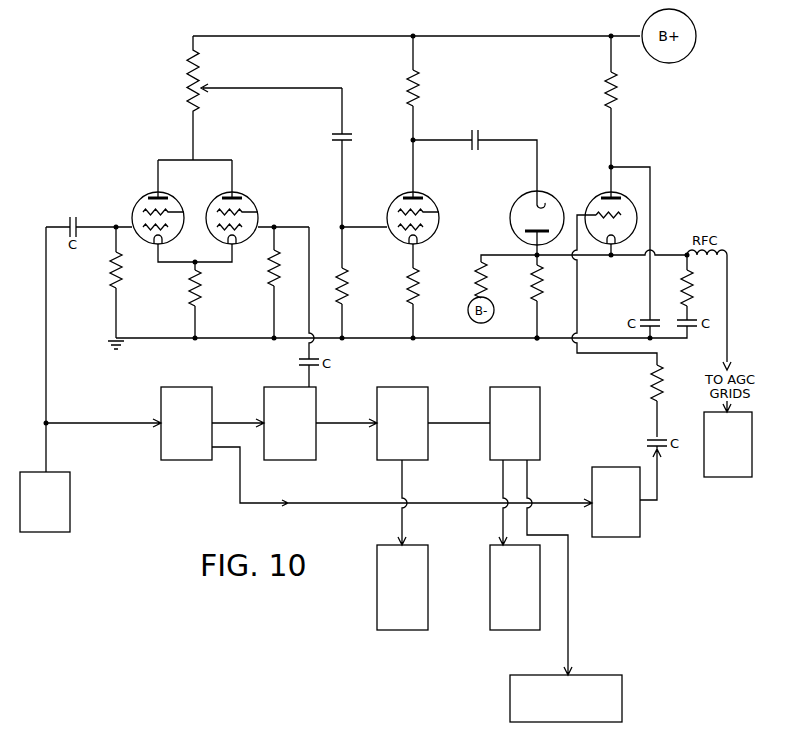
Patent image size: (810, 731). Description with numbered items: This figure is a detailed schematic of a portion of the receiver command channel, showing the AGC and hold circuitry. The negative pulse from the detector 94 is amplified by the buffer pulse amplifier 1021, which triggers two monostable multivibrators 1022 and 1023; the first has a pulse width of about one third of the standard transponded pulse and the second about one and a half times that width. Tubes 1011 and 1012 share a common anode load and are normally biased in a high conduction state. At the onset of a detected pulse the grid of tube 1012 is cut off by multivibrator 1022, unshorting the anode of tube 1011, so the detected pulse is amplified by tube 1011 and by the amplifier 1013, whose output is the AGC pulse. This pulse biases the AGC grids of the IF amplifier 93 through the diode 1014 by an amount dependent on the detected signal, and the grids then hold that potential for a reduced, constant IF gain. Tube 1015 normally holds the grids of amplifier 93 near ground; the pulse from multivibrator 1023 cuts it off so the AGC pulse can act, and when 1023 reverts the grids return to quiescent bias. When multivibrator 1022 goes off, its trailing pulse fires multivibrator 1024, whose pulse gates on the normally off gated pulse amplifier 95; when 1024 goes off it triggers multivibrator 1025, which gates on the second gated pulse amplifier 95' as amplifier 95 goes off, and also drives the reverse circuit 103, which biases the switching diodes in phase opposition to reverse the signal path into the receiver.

The tube 1011 is at (141, 195).
The tube 1012 is at (242, 195).
The amplifier 1013 is at (425, 195).
The diode 1014 is at (517, 200).
The tube 1015 is at (596, 196).
The buffer pulse amplifier 1021 is at (176, 461).
The monostable multivibrator 1022 is at (318, 403).
The monostable multivibrator 1023 is at (641, 512).
The monostable multivibrator 1024 is at (430, 403).
The monostable multivibrator 1025 is at (542, 403).
The IF amplifier 93 is at (723, 478).
The detector 94 is at (71, 506).
The gated pulse amplifier 95 is at (402, 587).
The amplifier 95' is at (515, 587).
The reverse circuit 103 is at (566, 698).